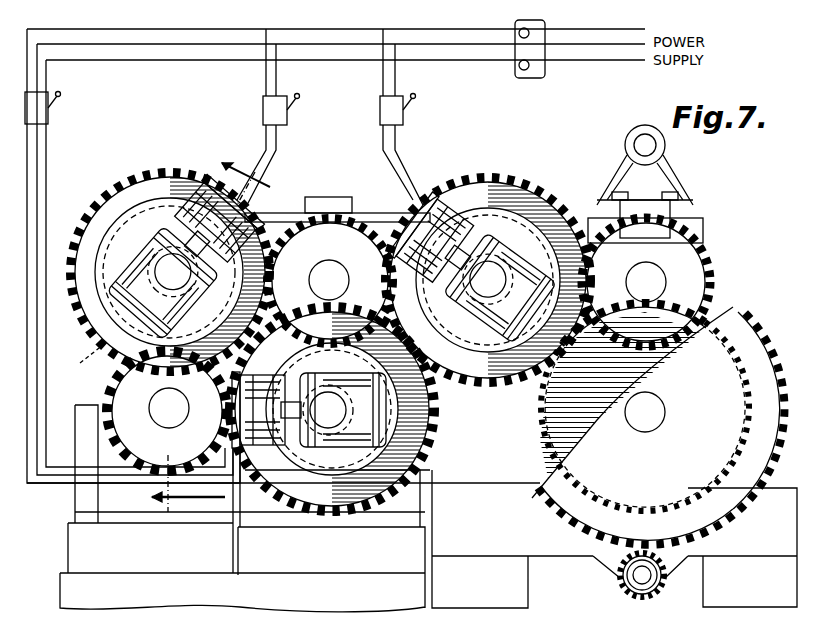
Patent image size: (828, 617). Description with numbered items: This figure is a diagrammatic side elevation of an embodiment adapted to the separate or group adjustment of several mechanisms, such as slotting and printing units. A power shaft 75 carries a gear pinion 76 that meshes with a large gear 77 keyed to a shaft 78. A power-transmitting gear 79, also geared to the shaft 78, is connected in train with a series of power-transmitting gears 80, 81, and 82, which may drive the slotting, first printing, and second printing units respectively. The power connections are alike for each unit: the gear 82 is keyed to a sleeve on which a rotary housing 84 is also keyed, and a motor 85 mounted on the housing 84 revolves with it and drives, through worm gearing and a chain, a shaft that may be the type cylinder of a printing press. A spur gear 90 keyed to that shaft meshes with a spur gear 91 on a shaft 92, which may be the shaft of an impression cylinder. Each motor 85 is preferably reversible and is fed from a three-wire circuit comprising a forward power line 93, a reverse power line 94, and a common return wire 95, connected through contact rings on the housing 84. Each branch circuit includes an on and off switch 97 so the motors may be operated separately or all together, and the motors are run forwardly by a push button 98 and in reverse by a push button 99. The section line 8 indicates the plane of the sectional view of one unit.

The section line 8- 8 is at (202, 329).
The power shaft 75 is at (658, 588).
The gear pinion 76 is at (620, 583).
The large gear 77 is at (737, 520).
The shaft 78 is at (660, 417).
The power-transmitting gear 79 is at (640, 407).
The power-transmitting gear 80 is at (552, 202).
The power-transmitting gear 81 is at (370, 500).
The power-transmitting gear 82 is at (132, 184).
The rotary housing 84 is at (120, 232).
The motor 85 is at (130, 282).
The spur gear 90 is at (81, 364).
The spur gear 91 is at (112, 442).
The shaft 92 is at (165, 425).
The forward power line 93 is at (617, 61).
The reverse power line 94 is at (582, 29).
The common return wire 95 is at (582, 45).
The on and off switch 97 is at (45, 117).
The push button 98 is at (515, 65).
The push button 99 is at (515, 30).